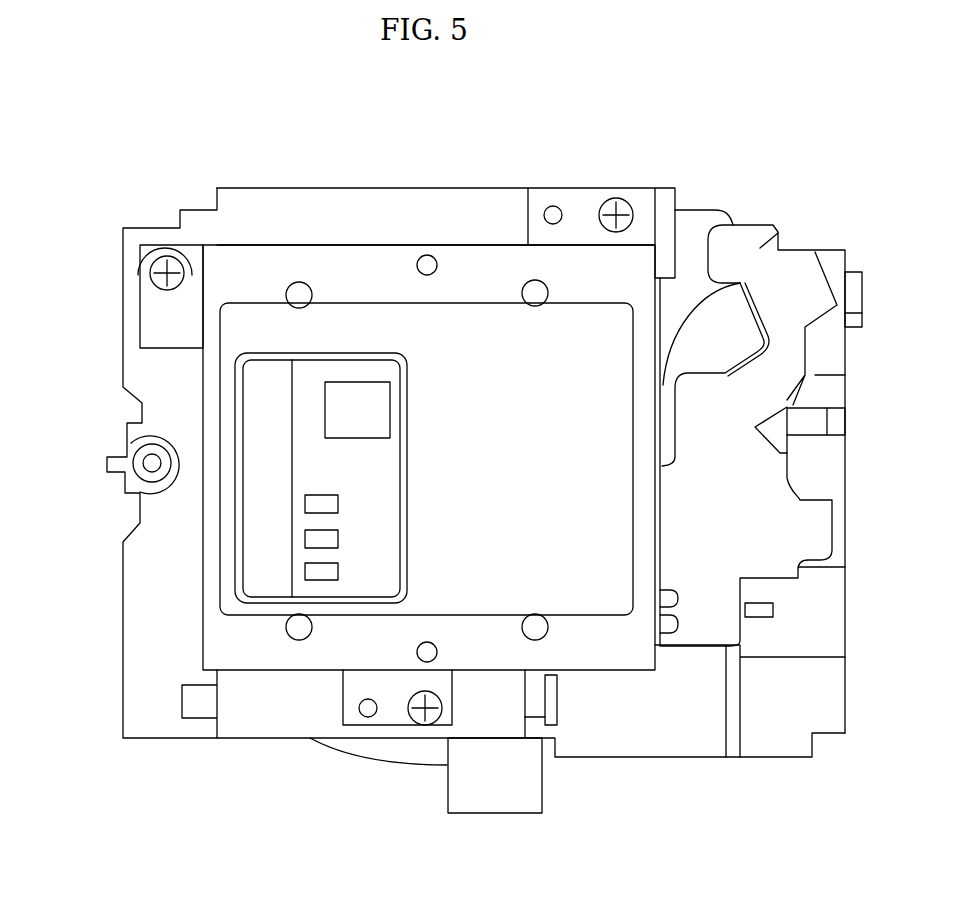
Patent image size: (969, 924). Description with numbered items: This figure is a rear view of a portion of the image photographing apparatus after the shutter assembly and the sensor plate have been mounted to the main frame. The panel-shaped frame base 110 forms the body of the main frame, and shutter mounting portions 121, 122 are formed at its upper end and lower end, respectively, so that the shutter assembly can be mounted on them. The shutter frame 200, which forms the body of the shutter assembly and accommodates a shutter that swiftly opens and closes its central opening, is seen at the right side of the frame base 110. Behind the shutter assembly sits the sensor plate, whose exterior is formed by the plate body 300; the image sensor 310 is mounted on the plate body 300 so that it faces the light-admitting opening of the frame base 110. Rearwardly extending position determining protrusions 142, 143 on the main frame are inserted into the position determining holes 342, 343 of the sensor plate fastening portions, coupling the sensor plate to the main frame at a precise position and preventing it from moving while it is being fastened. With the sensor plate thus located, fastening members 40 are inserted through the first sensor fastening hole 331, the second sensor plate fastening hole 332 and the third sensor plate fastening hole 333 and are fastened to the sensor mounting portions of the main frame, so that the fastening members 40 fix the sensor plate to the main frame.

The frame base 110 is at (152, 723).
The shutter mounting portion 121 is at (400, 198).
The shutter mounting portion 122 is at (268, 723).
The shutter frame 200 is at (778, 232).
The plate body 300 is at (595, 652).
The image sensor 310 is at (300, 527).
The fastening member 40 is at (401, 489).
The first sensor fastening hole 331 is at (157, 253).
The second sensor plate fastening hole 332 is at (627, 200).
The third sensor plate fastening hole 333 is at (425, 725).
The position determining hole 342 is at (527, 163).
The position determining hole 343 is at (317, 787).
The position determining protrusion 142 is at (551, 206).
The position determining protrusion 143 is at (365, 716).